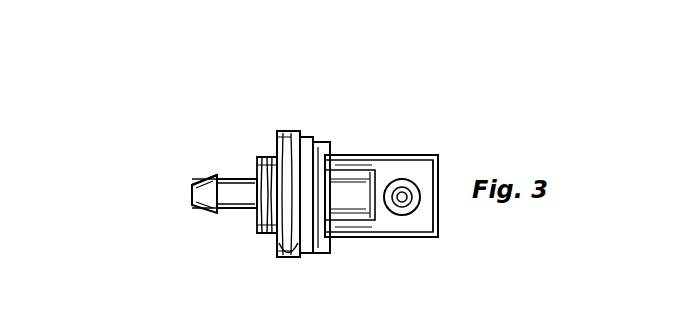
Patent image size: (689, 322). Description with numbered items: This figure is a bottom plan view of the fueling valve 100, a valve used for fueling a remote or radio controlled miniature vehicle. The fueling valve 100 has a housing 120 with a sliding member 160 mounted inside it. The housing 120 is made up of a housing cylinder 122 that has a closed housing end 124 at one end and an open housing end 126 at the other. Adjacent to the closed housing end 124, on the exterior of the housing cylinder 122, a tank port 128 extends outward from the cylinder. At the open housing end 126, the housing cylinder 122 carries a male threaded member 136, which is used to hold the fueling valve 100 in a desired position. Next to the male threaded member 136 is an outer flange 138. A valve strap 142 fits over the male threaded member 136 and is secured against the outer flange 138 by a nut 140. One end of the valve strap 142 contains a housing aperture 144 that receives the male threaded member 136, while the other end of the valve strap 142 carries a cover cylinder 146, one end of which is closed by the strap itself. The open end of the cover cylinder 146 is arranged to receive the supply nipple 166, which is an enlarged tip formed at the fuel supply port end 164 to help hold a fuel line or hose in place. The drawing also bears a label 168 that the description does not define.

The sensor assembly 100 is at (353, 120).
The sensor housing 120 is at (469, 133).
The housing body 122 is at (380, 154).
The housing end wall 124 is at (438, 203).
The fitting stem 126 is at (256, 168).
The connector port 128 is at (403, 192).
The threaded portion 136 is at (265, 233).
The flange plate 138 is at (317, 141).
The nut 140 is at (300, 132).
The nut lower portion 142 is at (288, 257).
The washer 144 is at (305, 136).
The recess 146 is at (355, 207).
The hose barb 160 is at (236, 208).
The barb tip 164 is at (190, 184).
The barb upper edge 166 is at (204, 176).
The barb end face 168 is at (190, 192).